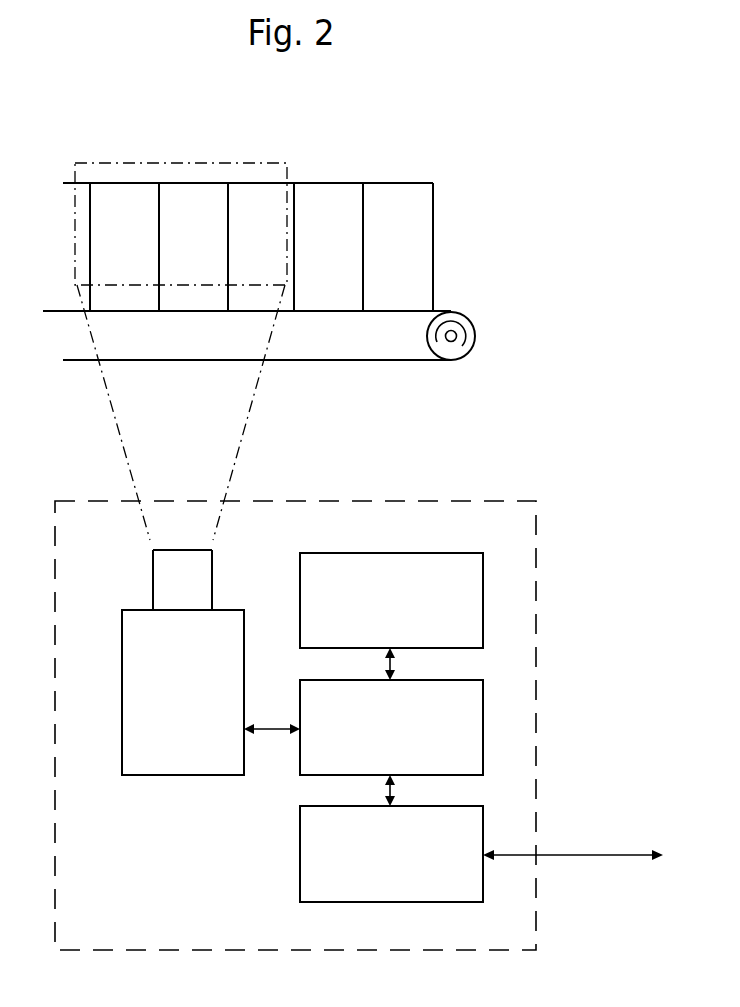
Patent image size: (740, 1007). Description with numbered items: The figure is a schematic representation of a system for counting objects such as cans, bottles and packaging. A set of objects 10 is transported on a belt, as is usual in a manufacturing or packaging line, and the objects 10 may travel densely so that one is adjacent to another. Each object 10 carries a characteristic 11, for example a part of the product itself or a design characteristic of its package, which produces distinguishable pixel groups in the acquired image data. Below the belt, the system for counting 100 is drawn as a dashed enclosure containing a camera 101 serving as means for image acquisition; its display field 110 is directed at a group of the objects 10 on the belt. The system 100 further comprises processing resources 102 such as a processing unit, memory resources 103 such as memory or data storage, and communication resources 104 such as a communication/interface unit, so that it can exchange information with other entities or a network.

The object 10 is at (248, 247).
The characteristic 11 is at (392, 202).
The display field 110 is at (110, 163).
The system for counting 100 is at (432, 501).
The camera 101 is at (183, 662).
The processing resources 102 is at (391, 727).
The memory resources 103 is at (391, 600).
The communication resources 104 is at (391, 854).